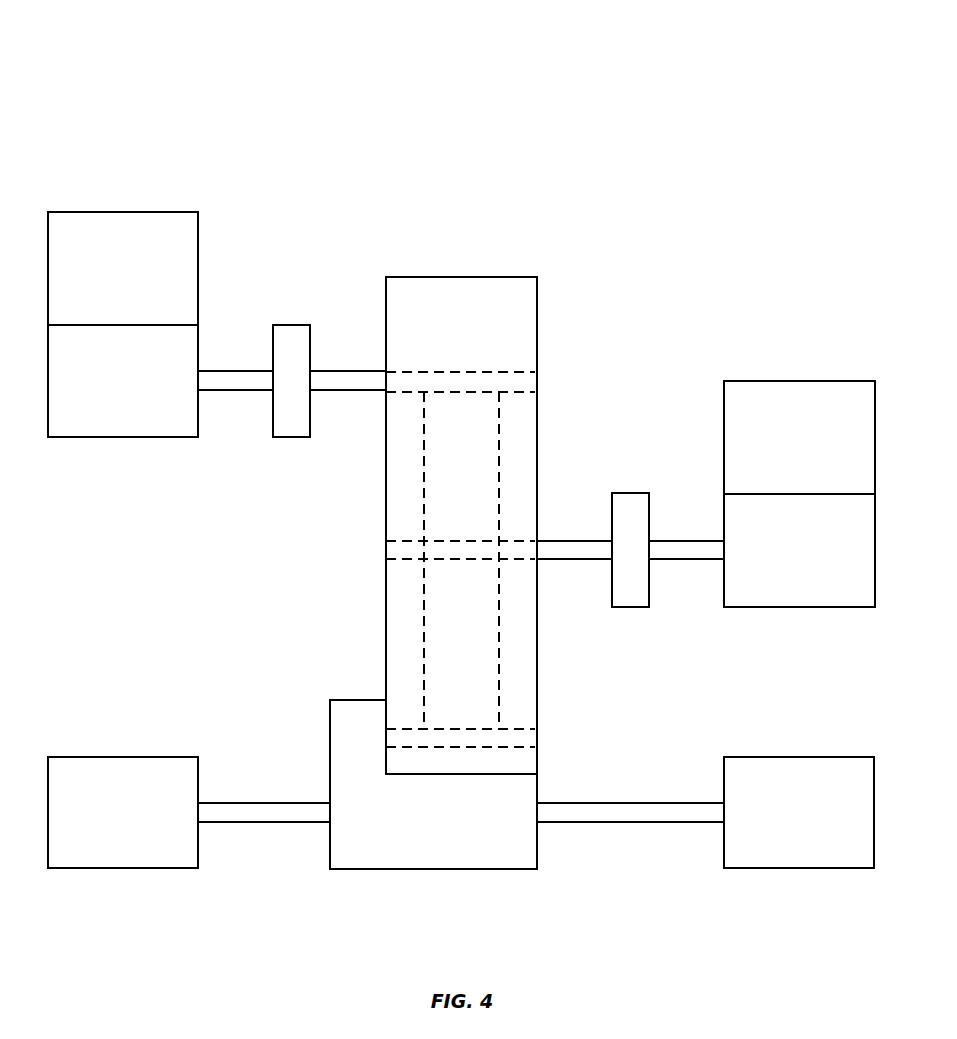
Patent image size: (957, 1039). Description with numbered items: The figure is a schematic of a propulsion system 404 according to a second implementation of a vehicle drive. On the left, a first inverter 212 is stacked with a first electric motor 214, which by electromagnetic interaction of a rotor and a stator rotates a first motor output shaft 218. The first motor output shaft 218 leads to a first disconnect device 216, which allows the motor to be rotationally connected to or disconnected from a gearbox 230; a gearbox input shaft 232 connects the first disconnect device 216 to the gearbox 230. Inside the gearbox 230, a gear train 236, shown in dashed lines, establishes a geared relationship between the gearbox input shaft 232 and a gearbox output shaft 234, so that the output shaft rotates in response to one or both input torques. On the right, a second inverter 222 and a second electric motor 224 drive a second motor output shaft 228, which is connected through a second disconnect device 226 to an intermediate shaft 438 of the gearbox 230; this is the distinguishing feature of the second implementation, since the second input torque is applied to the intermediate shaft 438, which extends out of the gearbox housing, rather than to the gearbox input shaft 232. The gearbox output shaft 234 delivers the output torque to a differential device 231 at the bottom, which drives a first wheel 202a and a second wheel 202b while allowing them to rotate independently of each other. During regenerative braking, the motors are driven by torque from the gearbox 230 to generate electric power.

The propulsion system 404 is at (123, 92).
The first inverter 212 is at (88, 212).
The first electric motor 214 is at (88, 438).
The first disconnect device 216 is at (296, 324).
The first motor output shaft 218 is at (238, 370).
The gearbox 230 is at (501, 276).
The gearbox input shaft 232 is at (463, 371).
The gear train 236 is at (424, 506).
The gearbox output shaft 234 is at (520, 729).
The intermediate shaft 438 is at (576, 539).
The second disconnect device 226 is at (632, 493).
The second motor output shaft 228 is at (688, 539).
The second inverter 222 is at (838, 381).
The second electric motor 224 is at (838, 608).
The differential device 231 is at (500, 870).
The first wheel 202a is at (86, 869).
The second wheel 202b is at (836, 869).